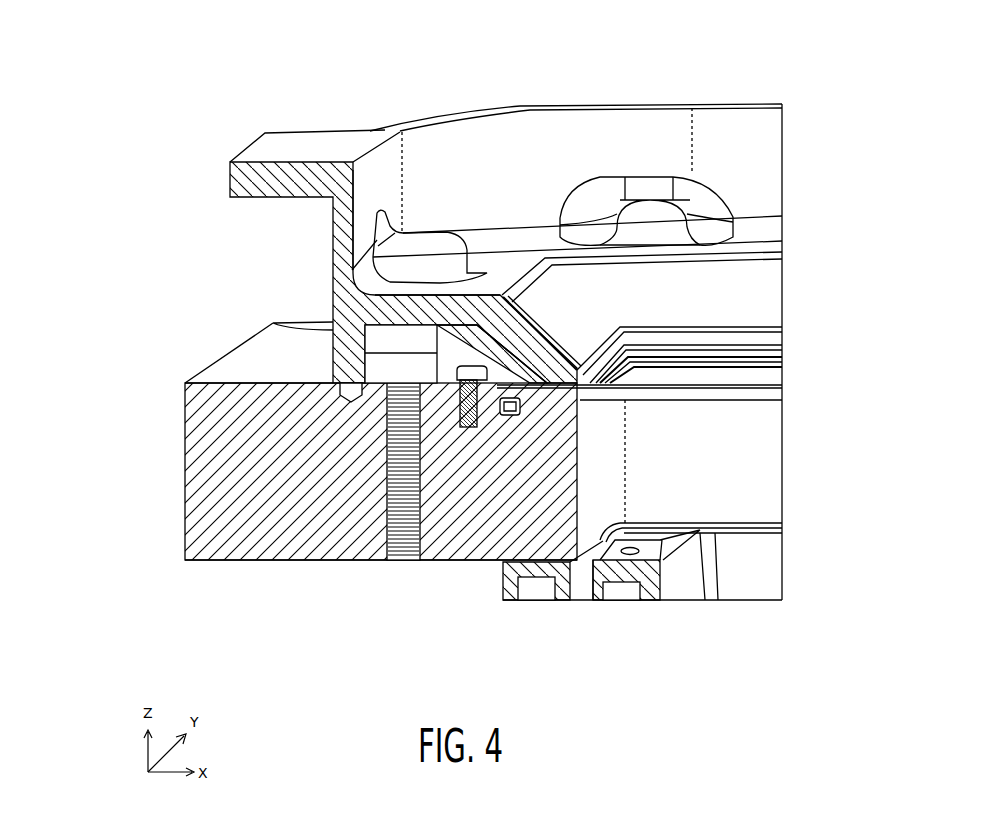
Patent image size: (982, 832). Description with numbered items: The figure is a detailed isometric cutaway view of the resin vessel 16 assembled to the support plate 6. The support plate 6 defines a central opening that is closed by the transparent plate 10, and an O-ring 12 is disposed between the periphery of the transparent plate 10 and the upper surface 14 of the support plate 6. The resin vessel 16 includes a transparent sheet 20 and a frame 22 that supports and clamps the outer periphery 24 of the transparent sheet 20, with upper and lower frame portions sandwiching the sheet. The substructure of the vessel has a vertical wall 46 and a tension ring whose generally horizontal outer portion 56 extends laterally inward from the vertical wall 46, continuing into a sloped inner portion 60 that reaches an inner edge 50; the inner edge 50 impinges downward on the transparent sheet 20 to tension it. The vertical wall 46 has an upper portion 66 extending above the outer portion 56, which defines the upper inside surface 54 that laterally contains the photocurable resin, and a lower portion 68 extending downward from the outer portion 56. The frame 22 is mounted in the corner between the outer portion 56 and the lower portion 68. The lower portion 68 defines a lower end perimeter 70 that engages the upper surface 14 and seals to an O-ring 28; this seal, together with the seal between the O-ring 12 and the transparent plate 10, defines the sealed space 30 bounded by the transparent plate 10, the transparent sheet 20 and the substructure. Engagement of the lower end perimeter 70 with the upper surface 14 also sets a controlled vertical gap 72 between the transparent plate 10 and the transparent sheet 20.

The support plate 6 is at (213, 547).
The transparent plate 10 is at (735, 397).
The O-ring 12 is at (503, 405).
The upper surface 14 is at (263, 372).
The resin vessel 16 is at (342, 152).
The transparent sheet 20 is at (662, 600).
The frame 22 is at (398, 370).
The outer periphery 24 is at (445, 365).
The O-ring 28 is at (340, 400).
The sealed space 30 is at (458, 378).
The vertical wall 46 is at (347, 308).
The inner edge 50 is at (565, 362).
The upper inside surface 54 is at (713, 130).
The horizontal outer portion 56 is at (417, 310).
The sloped inner portion 60 is at (528, 365).
The upper portion 66 is at (347, 227).
The lower portion 68 is at (345, 352).
The lower end perimeter 70 is at (330, 387).
The controlled vertical gap 72 is at (678, 388).